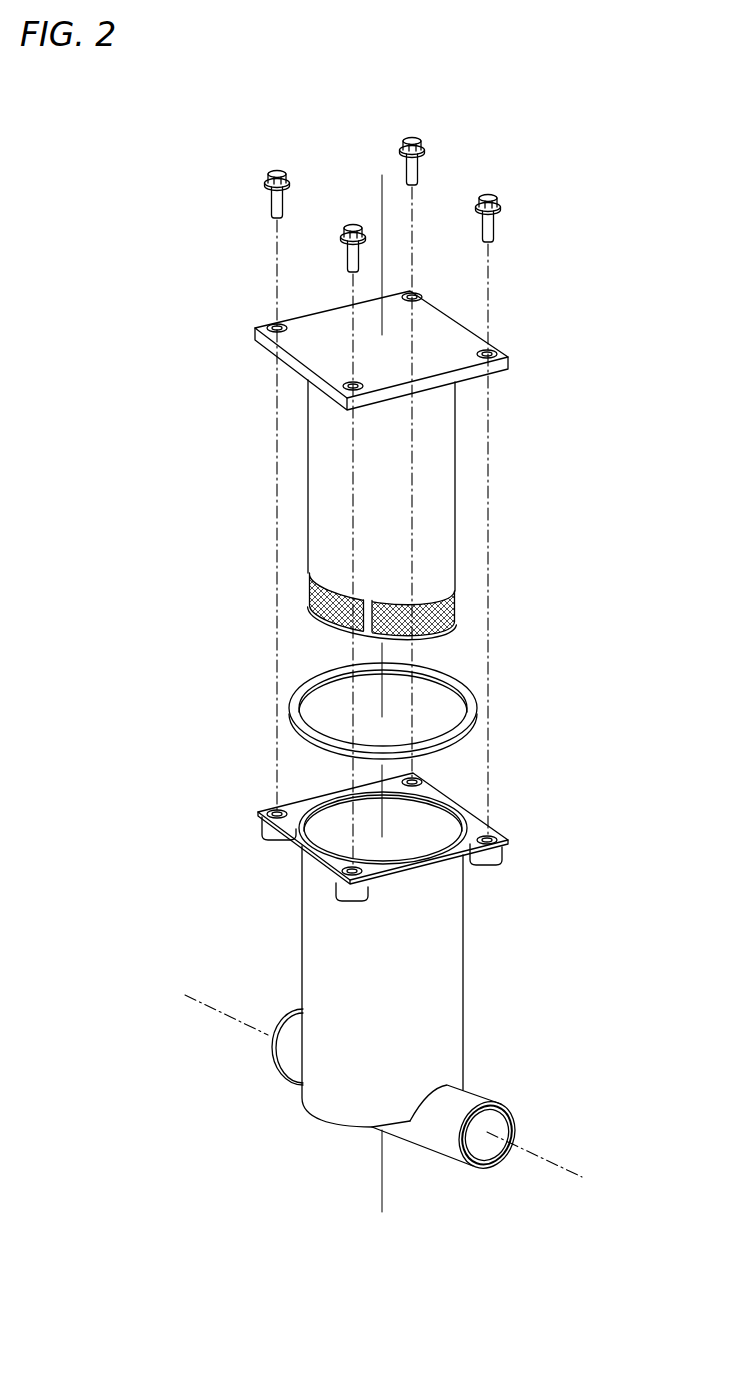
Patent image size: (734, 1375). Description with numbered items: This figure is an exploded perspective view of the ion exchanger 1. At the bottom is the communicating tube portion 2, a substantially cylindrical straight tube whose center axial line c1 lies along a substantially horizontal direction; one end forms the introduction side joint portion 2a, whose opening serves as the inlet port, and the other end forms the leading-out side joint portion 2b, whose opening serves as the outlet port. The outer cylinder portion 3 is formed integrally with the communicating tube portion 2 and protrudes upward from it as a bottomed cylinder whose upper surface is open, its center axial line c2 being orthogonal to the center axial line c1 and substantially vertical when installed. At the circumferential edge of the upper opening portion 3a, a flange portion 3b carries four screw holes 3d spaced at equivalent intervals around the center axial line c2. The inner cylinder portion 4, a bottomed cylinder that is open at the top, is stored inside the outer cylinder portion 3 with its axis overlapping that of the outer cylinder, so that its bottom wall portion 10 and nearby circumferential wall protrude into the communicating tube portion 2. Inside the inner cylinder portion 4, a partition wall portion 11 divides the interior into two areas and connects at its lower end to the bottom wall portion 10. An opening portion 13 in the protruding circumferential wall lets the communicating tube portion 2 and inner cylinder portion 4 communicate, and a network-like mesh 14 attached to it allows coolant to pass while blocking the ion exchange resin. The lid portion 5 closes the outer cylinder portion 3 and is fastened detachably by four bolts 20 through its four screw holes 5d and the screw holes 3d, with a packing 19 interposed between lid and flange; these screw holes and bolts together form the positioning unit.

The ion exchanger 1 is at (585, 233).
The communicating tube portion 2 is at (473, 1093).
The introduction side joint portion 2a is at (470, 1165).
The leading-out side joint portion 2b is at (270, 1065).
The outer cylinder portion 3 is at (465, 965).
The upper opening portion 3a is at (453, 808).
The flange portion 3b is at (290, 846).
The screw holes 3d is at (412, 778).
The inner cylinder portion 4 is at (457, 531).
The lid portion 5 is at (433, 320).
The screw holes 5d is at (265, 325).
The bottom wall portion 10 is at (352, 633).
The partition wall portion 11 is at (326, 613).
The opening portion 13 is at (424, 607).
The mesh 14 is at (456, 605).
The packing 19 is at (440, 673).
The bolts 20 is at (274, 170).
The center axial line c1 is at (538, 1160).
The center axial line c2 is at (382, 1150).